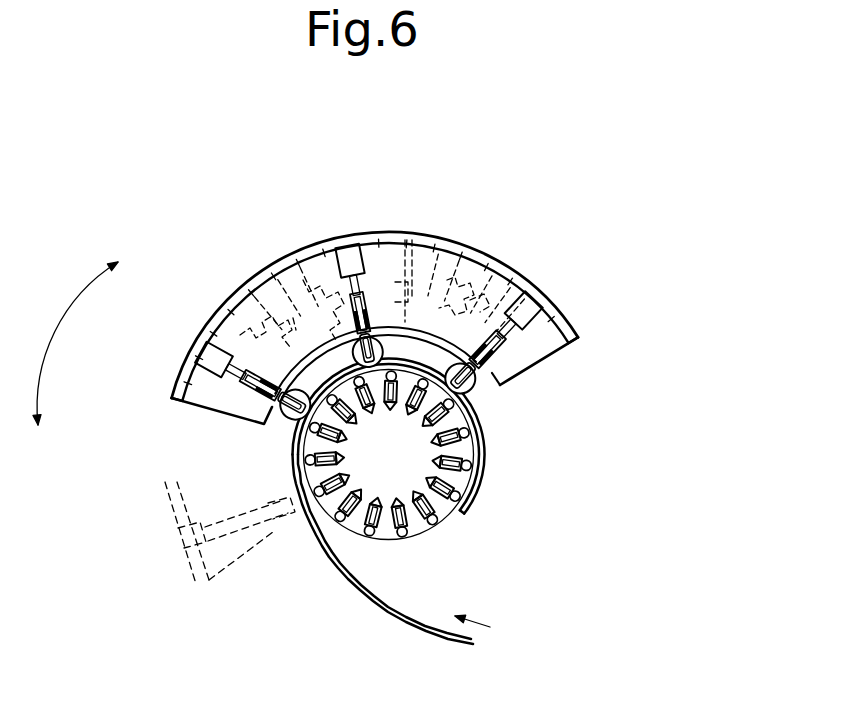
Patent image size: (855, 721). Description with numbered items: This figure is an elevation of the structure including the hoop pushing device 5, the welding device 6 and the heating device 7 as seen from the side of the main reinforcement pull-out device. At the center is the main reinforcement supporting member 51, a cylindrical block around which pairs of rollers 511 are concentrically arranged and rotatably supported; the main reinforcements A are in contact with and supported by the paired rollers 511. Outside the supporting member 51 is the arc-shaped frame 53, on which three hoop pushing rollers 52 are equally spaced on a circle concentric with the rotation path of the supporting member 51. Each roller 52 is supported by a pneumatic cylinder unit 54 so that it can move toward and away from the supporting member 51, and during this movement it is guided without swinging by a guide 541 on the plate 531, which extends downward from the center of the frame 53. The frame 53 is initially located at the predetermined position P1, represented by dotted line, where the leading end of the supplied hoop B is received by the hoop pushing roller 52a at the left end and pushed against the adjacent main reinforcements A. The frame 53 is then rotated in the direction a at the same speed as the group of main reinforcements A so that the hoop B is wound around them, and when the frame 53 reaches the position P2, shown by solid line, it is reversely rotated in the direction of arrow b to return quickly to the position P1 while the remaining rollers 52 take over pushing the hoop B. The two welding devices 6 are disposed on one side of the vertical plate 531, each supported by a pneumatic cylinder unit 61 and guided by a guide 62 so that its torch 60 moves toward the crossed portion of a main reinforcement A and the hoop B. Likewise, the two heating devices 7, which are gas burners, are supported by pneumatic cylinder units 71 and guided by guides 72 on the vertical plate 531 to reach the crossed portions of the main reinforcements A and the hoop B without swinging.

The hoop pushing device 5 is at (274, 223).
The welding device 6 is at (448, 240).
The heating device 7 is at (292, 307).
The main reinforcement supporting member 51 is at (432, 521).
The hoop pushing roller 52 is at (366, 338).
The hoop pushing roller at the left end 52a is at (291, 520).
The arc-shaped frame 53 is at (555, 348).
The pneumatic cylinder unit 54 is at (350, 276).
The torch 60 is at (442, 281).
The pneumatic cylinder unit 61 is at (396, 245).
The guide 62 is at (425, 232).
The pneumatic cylinder unit 71 is at (290, 285).
The guide 72 is at (300, 300).
The roller 511 is at (398, 409).
The plate 531 is at (542, 351).
The guide 541 is at (356, 312).
The main reinforcement A is at (470, 431).
The hoop B is at (430, 627).
The predetermined position P1 is at (182, 556).
The position P2 is at (436, 232).
The direction a is at (84, 328).
The direction of arrow b is at (35, 452).